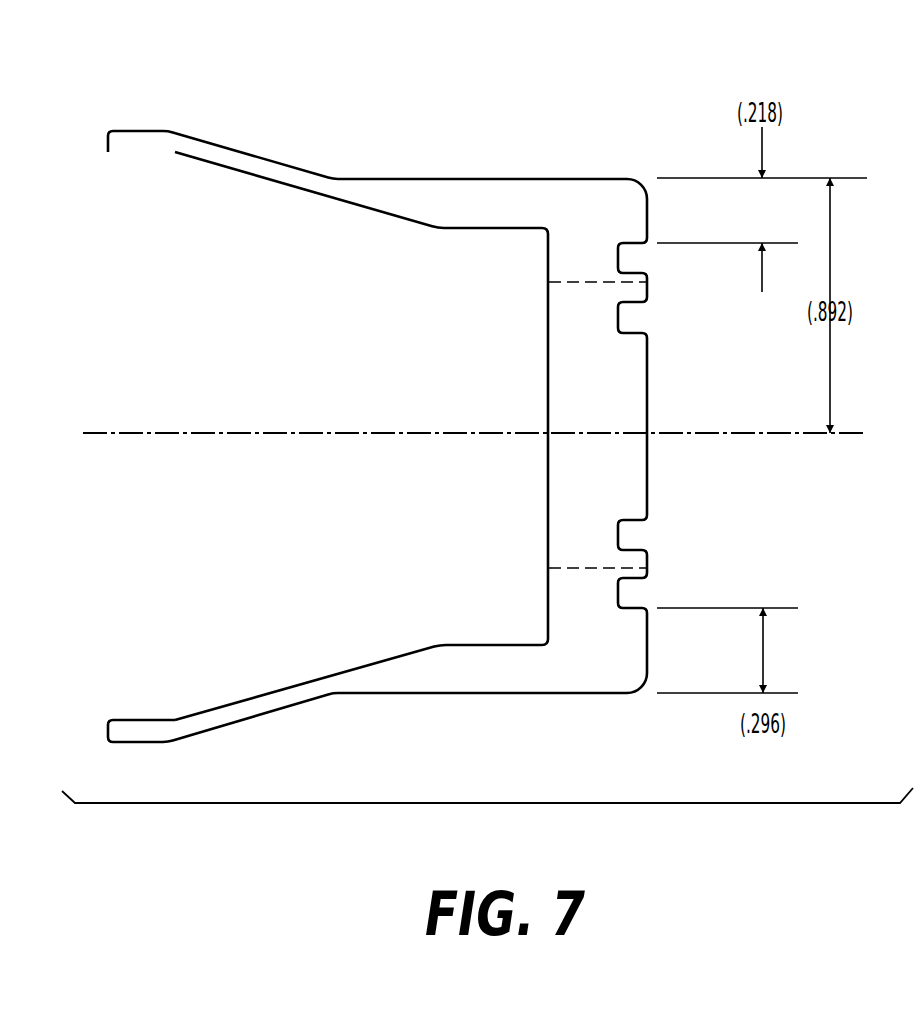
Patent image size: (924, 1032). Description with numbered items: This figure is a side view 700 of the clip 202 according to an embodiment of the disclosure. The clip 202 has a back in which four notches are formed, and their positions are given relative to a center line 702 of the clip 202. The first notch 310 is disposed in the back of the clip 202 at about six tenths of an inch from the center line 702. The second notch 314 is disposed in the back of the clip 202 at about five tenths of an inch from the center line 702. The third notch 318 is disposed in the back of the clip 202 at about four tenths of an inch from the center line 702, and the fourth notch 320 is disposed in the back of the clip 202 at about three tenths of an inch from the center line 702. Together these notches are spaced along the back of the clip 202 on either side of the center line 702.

The clip 202 is at (196, 65).
The first notch 310 is at (661, 259).
The third notch 318 is at (661, 317).
The fourth notch 320 is at (661, 532).
The second notch 314 is at (661, 592).
The center line 702 is at (703, 434).
The side view 700 is at (318, 804).